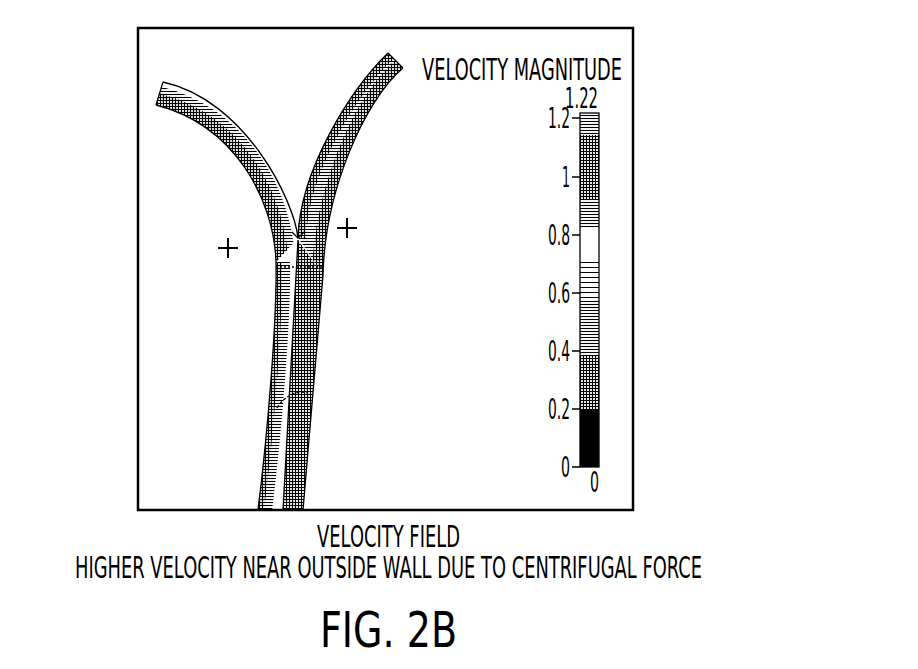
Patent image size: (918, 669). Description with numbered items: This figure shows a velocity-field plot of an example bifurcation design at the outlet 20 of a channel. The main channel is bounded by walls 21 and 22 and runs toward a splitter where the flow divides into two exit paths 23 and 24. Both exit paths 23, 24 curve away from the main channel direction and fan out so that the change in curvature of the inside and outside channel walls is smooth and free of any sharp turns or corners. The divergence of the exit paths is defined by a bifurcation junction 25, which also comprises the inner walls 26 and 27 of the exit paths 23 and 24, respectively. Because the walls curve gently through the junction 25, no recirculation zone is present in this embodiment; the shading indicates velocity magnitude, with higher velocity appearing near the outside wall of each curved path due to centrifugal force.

The outlet 20 is at (357, 258).
The channel wall 21 is at (283, 370).
The channel wall 22 is at (317, 372).
The exit path 23 is at (213, 102).
The exit path 24 is at (345, 97).
The bifurcation junction 25 is at (303, 173).
The inner wall 26 is at (250, 130).
The inner wall 27 is at (322, 150).